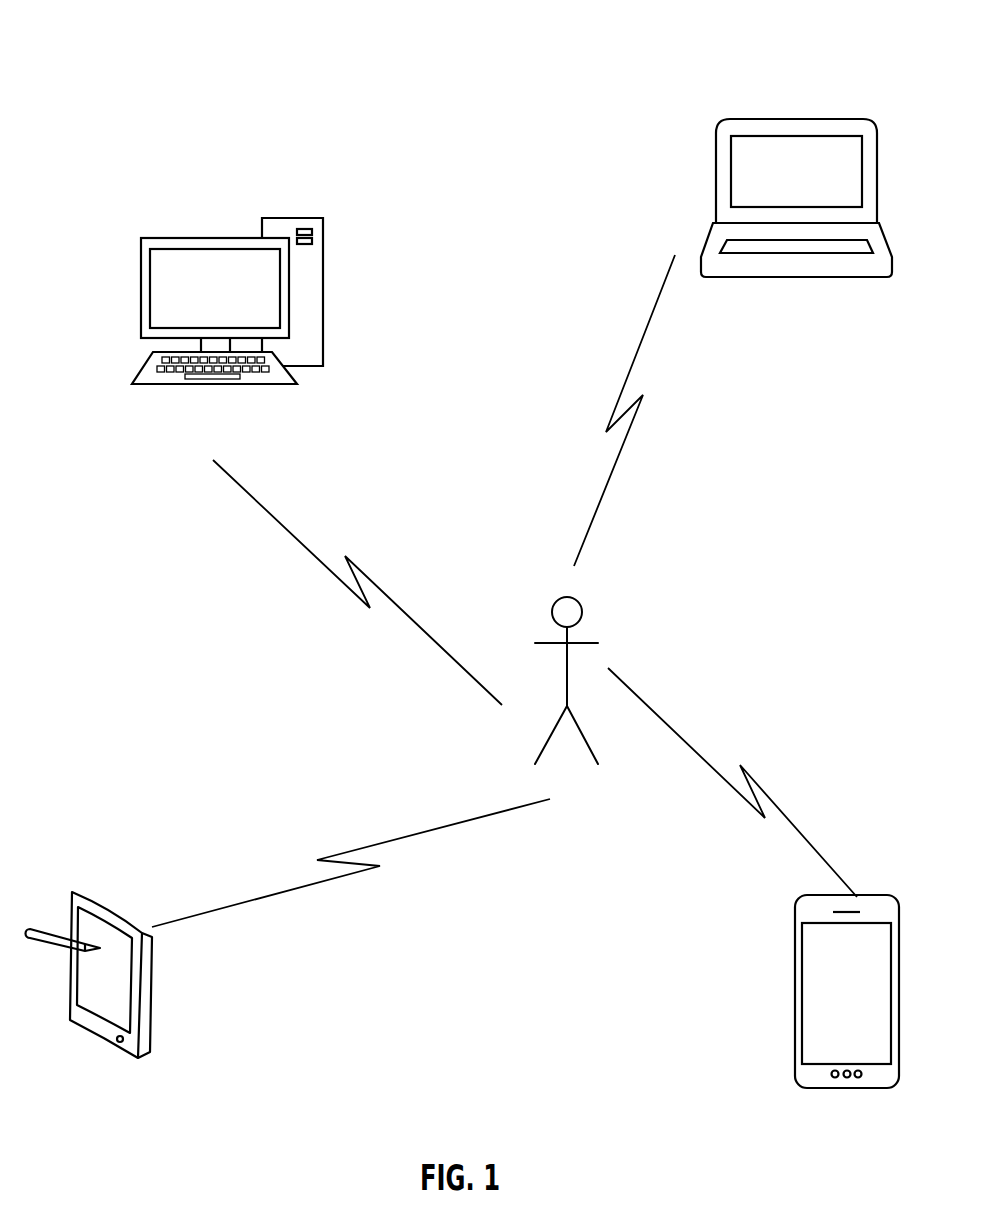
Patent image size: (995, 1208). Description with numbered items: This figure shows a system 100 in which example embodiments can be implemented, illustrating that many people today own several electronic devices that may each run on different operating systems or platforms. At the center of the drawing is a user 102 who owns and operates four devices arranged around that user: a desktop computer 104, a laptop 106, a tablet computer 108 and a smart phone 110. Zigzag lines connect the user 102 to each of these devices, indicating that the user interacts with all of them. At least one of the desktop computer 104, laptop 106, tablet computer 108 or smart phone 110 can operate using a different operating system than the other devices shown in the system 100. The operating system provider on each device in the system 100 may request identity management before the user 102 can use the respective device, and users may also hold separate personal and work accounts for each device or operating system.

The system 100 is at (149, 50).
The user 102 is at (582, 608).
The desktop computer 104 is at (323, 279).
The laptop 106 is at (802, 117).
The tablet computer 108 is at (117, 902).
The smart phone 110 is at (795, 1007).